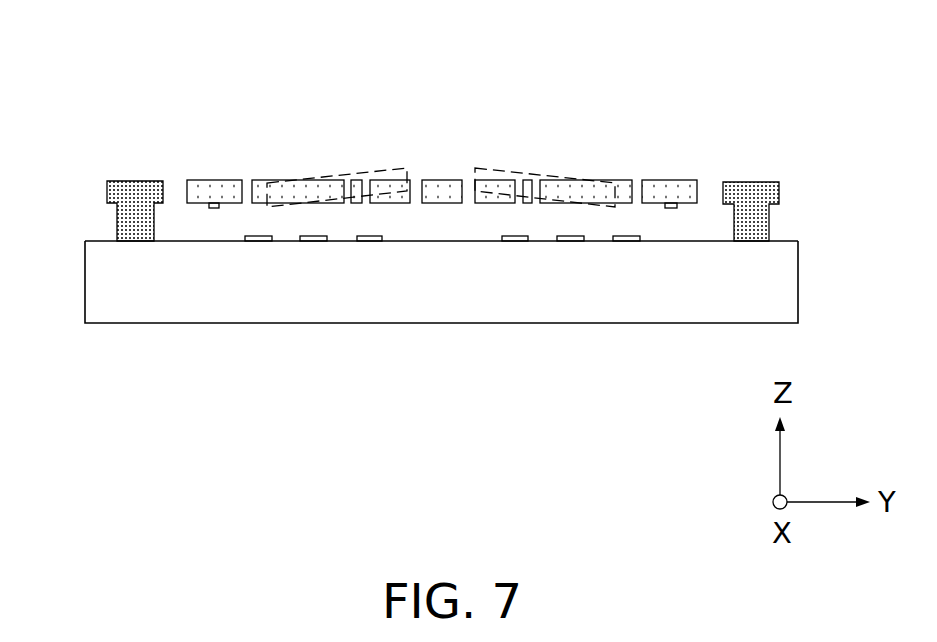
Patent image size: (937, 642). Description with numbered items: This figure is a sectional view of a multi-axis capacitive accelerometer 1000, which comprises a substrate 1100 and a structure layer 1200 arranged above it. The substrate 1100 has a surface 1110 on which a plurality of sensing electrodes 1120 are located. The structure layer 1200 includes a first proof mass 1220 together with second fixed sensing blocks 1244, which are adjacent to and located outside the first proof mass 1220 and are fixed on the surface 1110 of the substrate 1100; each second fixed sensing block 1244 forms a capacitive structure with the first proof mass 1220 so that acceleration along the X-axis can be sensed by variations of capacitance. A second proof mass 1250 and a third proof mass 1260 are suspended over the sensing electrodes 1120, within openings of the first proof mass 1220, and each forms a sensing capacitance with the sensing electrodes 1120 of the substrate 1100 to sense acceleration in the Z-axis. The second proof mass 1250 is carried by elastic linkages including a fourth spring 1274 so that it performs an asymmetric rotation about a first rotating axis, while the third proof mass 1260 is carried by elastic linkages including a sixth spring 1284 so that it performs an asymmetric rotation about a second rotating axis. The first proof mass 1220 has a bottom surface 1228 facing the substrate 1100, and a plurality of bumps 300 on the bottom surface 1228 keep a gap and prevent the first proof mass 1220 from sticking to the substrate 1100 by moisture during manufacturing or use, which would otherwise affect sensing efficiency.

The multi-axis capacitive accelerometer 1000 is at (878, 45).
The substrate 1100 is at (473, 293).
The surface 1110 is at (177, 232).
The sensing electrodes 1120 is at (258, 242).
The structure layer 1200 is at (76, 205).
The second fixed sensing blocks 1244 is at (127, 188).
The bumps 300 is at (213, 208).
The third proof mass 1260 is at (295, 192).
The sixth spring 1284 is at (358, 187).
The fourth spring 1274 is at (526, 192).
The second proof mass 1250 is at (585, 190).
The first proof mass 1220 is at (663, 190).
The bottom surface 1228 is at (690, 216).